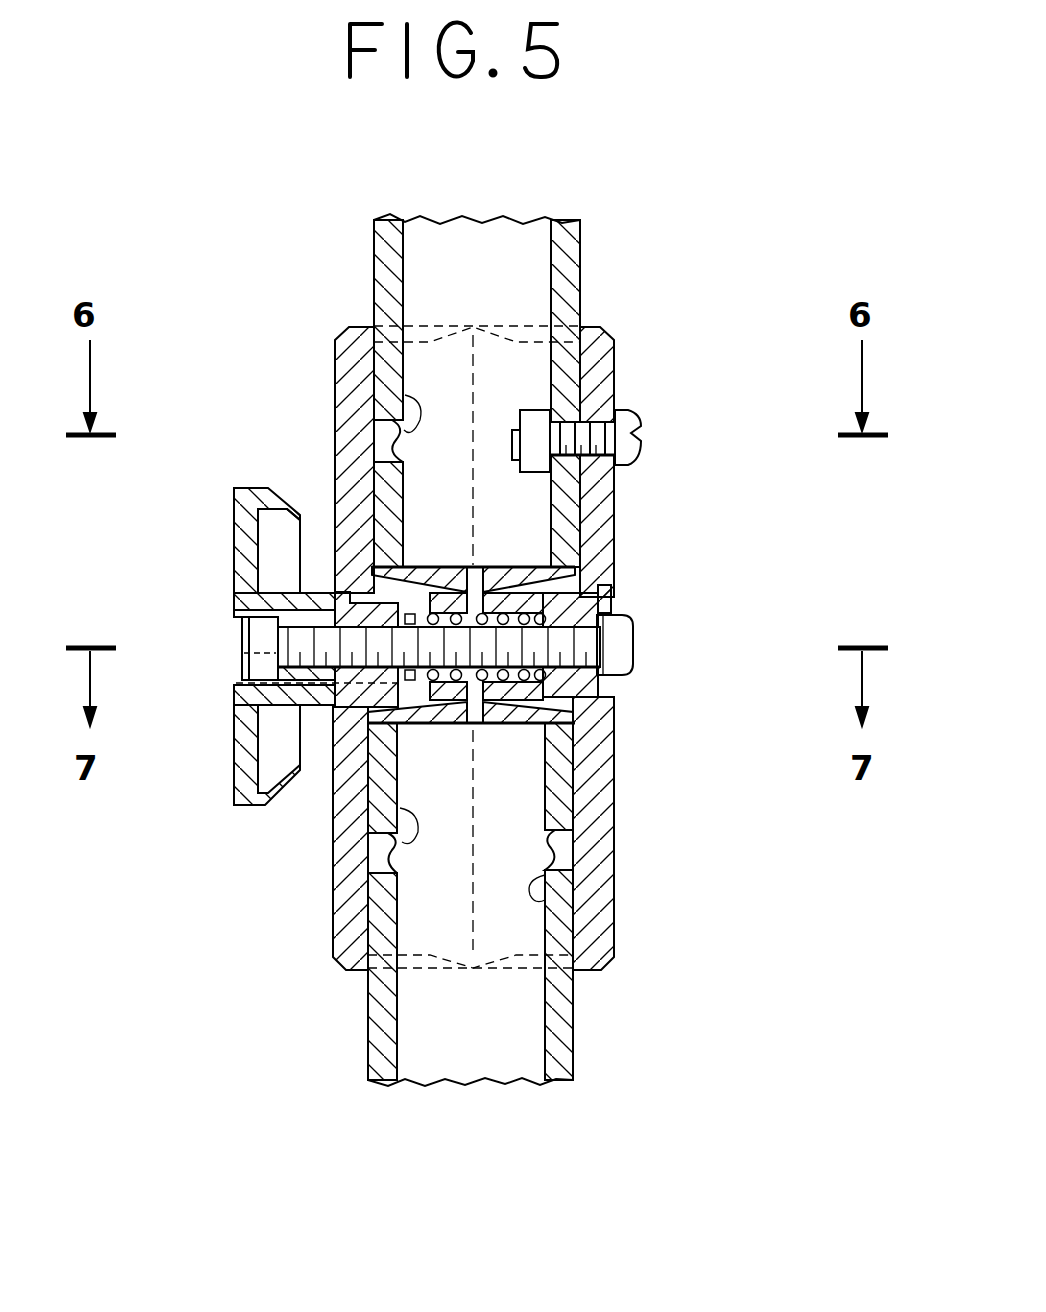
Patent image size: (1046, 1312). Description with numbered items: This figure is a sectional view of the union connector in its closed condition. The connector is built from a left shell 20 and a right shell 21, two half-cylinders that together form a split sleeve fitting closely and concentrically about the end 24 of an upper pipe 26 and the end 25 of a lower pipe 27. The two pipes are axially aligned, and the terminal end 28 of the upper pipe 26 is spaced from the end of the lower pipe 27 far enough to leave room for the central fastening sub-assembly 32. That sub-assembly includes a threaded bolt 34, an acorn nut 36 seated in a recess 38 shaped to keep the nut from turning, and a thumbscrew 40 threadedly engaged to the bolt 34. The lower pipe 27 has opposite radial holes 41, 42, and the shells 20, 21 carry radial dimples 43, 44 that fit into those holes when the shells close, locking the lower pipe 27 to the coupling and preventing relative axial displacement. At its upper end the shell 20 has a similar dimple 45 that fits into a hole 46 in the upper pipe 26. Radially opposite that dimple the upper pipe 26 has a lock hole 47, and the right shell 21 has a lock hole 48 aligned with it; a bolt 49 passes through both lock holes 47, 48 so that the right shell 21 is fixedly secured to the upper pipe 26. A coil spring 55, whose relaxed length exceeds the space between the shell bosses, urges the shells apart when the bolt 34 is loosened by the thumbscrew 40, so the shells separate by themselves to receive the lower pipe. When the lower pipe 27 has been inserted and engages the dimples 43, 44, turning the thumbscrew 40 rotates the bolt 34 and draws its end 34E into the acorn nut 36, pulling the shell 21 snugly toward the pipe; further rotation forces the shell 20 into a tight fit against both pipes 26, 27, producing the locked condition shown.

The left shell 20 is at (340, 328).
The right shell 21 is at (602, 320).
The end of upper pipe 24 is at (575, 500).
The end of lower pipe 25 is at (597, 770).
The upper pipe 26 is at (452, 240).
The lower pipe 27 is at (440, 1040).
The terminal end of upper pipe 28 is at (535, 560).
The central fastening sub-assembly 32 is at (788, 565).
The threaded bolt 34 is at (330, 640).
The end of bolt 34E is at (632, 622).
The acorn nut 36 is at (605, 685).
The recess 38 is at (580, 722).
The thumbscrew 40 is at (240, 807).
The radial hole 41 is at (370, 810).
The radial hole 42 is at (595, 887).
The radial dimple 43 is at (370, 860).
The radial dimple 44 is at (575, 850).
The dimple 45 is at (378, 445).
The hole 46 is at (395, 396).
The lock hole 47 is at (560, 408).
The lock hole 48 is at (578, 462).
The bolt 49 is at (632, 418).
The coil spring 55 is at (440, 598).